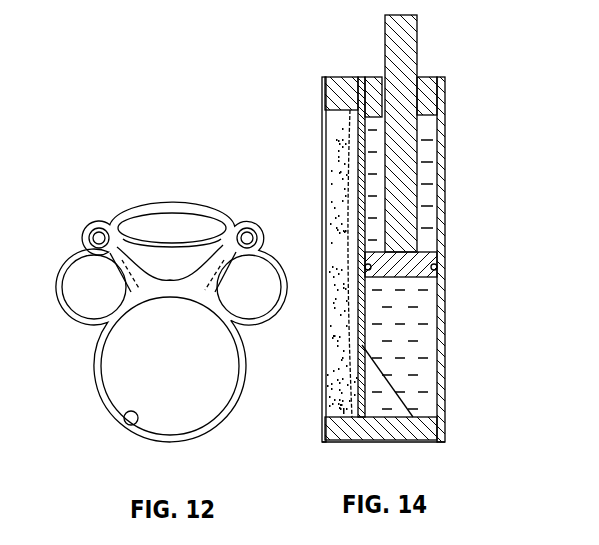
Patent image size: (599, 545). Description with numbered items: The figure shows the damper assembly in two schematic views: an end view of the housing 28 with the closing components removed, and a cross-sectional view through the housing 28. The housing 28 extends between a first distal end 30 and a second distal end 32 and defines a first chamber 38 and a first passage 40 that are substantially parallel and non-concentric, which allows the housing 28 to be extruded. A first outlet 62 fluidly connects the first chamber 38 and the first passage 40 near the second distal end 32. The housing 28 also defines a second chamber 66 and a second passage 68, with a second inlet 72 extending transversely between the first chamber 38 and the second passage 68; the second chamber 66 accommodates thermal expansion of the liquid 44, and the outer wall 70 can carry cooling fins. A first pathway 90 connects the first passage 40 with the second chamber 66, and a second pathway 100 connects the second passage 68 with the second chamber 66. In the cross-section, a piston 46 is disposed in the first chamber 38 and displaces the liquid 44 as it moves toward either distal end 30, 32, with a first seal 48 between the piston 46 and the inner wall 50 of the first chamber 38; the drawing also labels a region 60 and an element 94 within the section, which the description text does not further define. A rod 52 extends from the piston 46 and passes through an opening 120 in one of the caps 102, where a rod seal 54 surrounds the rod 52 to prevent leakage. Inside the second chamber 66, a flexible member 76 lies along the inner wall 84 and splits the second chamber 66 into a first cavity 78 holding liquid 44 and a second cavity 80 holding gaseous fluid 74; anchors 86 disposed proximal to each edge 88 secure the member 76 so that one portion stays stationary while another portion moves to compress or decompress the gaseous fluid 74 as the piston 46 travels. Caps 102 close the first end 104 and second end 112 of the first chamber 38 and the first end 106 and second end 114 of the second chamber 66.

In FIG. 12, the housing 28 is at (216, 195).
In FIG. 14, the housing 28 is at (447, 318).
In FIG. 14, the first distal end 30 is at (442, 440).
In FIG. 12, the second distal end 32 is at (99, 345).
In FIG. 14, the second distal end 32 is at (447, 78).
In FIG. 12, the first chamber 38 is at (214, 390).
In FIG. 14, the first chamber 38 is at (429, 213).
In FIG. 12, the first passage 40 is at (262, 273).
In FIG. 14, the liquid 44 is at (417, 405).
In FIG. 14, the piston 46 is at (437, 266).
In FIG. 14, the first seal 48 is at (438, 269).
In FIG. 12, the inner wall 50 is at (134, 426).
In FIG. 14, the inner wall 50 is at (430, 363).
In FIG. 14, the rod 52 is at (408, 32).
In FIG. 14, the rod seal 54 is at (380, 100).
In FIG. 14, the compression chamber 60 is at (438, 305).
In FIG. 12, the first outlet 62 is at (241, 326).
In FIG. 12, the second chamber 66 is at (148, 210).
In FIG. 14, the second chamber 66 is at (352, 418).
In FIG. 12, the second passage 68 is at (82, 291).
In FIG. 12, the outer wall 70 is at (100, 400).
In FIG. 12, the second inlet 72 is at (95, 324).
In FIG. 14, the gaseous fluid 74 is at (326, 113).
In FIG. 12, the member 76 is at (222, 215).
In FIG. 14, the member 76 is at (336, 133).
In FIG. 12, the first cavity 78 is at (187, 288).
In FIG. 14, the first cavity 78 is at (413, 437).
In FIG. 12, the second cavity 80 is at (160, 205).
In FIG. 14, the second cavity 80 is at (336, 386).
In FIG. 12, the inner wall 84 is at (187, 208).
In FIG. 14, the inner wall 84 is at (352, 170).
In FIG. 12, the anchors 86 is at (86, 232).
In FIG. 12, the edge 88 is at (103, 228).
In FIG. 12, the first pathway 90 is at (203, 290).
In FIG. 14, the inner tube 94 is at (430, 258).
In FIG. 12, the second pathway 100 is at (139, 238).
In FIG. 14, the caps 102 is at (336, 92).
In FIG. 14, the first end 104 is at (440, 419).
In FIG. 14, the first end 106 is at (323, 403).
In FIG. 14, the second end 112 is at (441, 137).
In FIG. 14, the second end 114 is at (348, 98).
In FIG. 14, the opening 120 is at (428, 88).